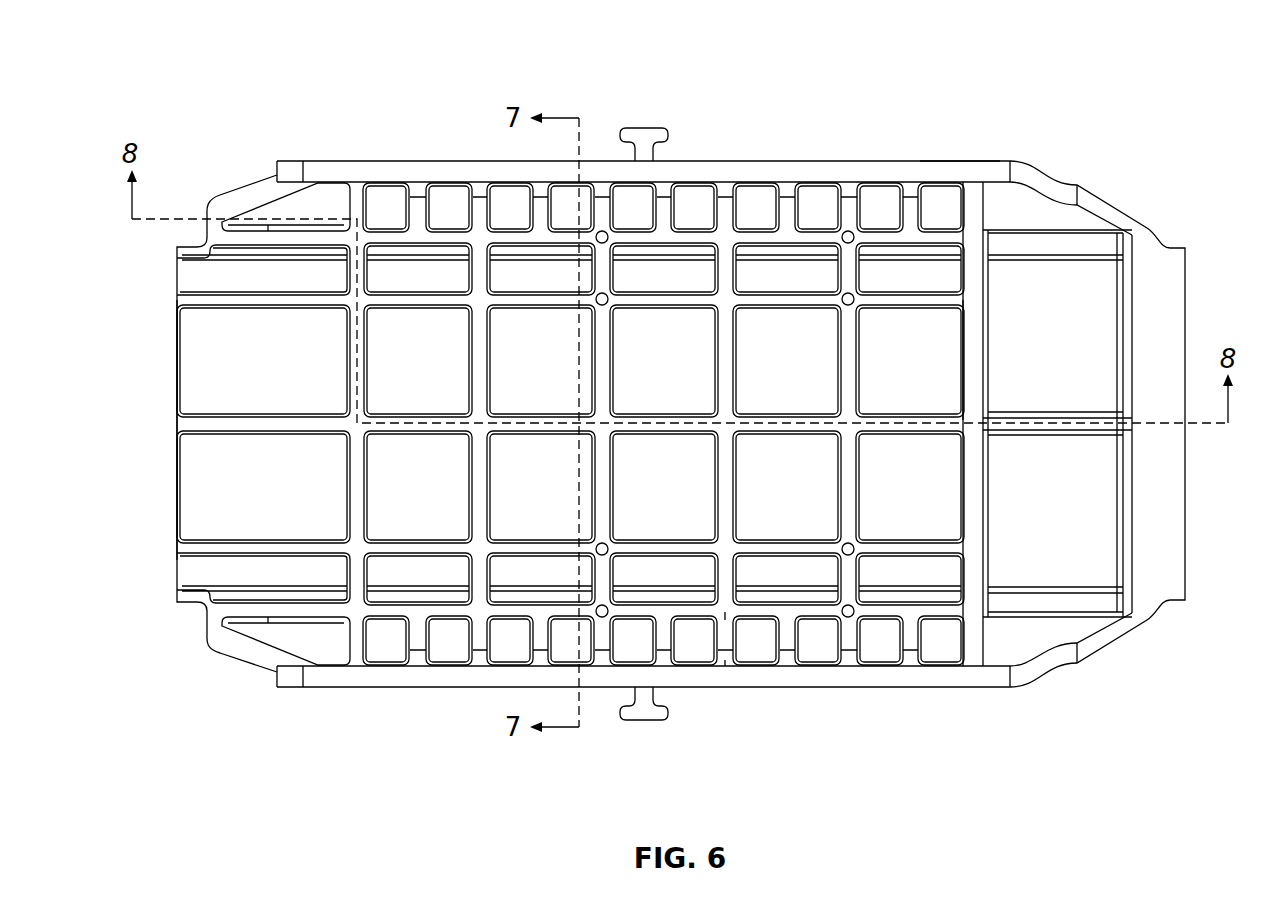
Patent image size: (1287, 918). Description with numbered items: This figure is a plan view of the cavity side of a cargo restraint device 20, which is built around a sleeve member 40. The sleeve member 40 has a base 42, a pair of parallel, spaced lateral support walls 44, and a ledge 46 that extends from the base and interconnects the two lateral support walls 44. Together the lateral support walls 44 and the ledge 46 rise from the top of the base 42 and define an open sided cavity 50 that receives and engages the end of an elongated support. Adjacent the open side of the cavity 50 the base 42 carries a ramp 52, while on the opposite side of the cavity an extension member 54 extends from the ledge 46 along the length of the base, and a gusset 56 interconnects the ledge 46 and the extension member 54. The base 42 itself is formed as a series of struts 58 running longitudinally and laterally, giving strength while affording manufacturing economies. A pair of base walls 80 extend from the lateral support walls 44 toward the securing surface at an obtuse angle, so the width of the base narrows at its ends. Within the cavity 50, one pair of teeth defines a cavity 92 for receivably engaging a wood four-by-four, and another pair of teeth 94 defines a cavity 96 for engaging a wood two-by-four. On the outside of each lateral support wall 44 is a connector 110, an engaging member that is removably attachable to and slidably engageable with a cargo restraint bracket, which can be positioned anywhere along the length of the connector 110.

The cargo restraint device 20 is at (847, 150).
The sleeve member 40 is at (935, 170).
The base 42 is at (190, 605).
The lateral support walls 44 is at (688, 170).
The ledge 46 is at (970, 275).
The cavity 50 is at (787, 643).
The ramp 52 is at (195, 485).
The extension member 54 is at (1090, 555).
The gusset 56 is at (1080, 420).
The struts 58 is at (500, 195).
The base walls 80 is at (1022, 172).
The cavity for 4×4 92 is at (478, 207).
The teeth 94 is at (735, 300).
The cavity for 2×4 96 is at (950, 350).
The connector 110 is at (643, 128).